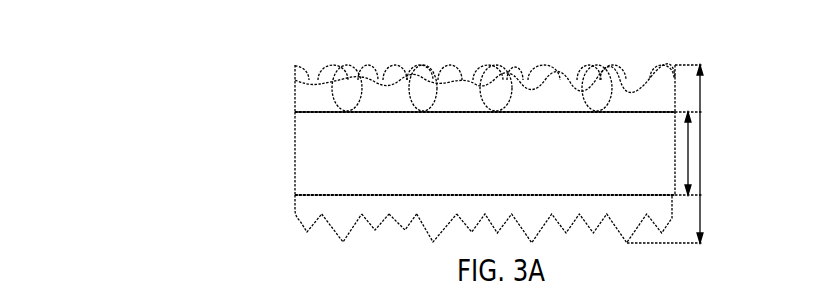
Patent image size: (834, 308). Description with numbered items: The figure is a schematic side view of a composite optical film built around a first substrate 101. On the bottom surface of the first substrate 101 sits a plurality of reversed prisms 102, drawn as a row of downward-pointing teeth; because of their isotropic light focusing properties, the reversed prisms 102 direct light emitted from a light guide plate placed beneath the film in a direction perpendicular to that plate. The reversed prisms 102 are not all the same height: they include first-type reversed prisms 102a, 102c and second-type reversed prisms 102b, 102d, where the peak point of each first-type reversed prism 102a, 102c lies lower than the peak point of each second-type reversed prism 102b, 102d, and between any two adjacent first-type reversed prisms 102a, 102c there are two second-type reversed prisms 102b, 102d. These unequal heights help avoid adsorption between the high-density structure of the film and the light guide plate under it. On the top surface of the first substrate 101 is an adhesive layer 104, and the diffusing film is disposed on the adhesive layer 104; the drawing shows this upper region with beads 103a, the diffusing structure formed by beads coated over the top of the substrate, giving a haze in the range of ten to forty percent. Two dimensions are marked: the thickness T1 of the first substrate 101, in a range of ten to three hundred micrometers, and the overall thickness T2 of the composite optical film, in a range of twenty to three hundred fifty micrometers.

The first substrate 101 is at (485, 153).
The reversed prisms 102 is at (387, 249).
The first-type reversed prism 102a is at (341, 237).
The second-type reversed prism 102b is at (373, 231).
The first-type reversed prism 102c is at (437, 238).
The second-type reversed prism 102d is at (403, 231).
The particles / protrusions 103a is at (468, 62).
The adhesive layer 104 is at (374, 82).
The thickness of the first substrate T1 is at (688, 148).
The thickness of the composite optical film T2 is at (700, 174).